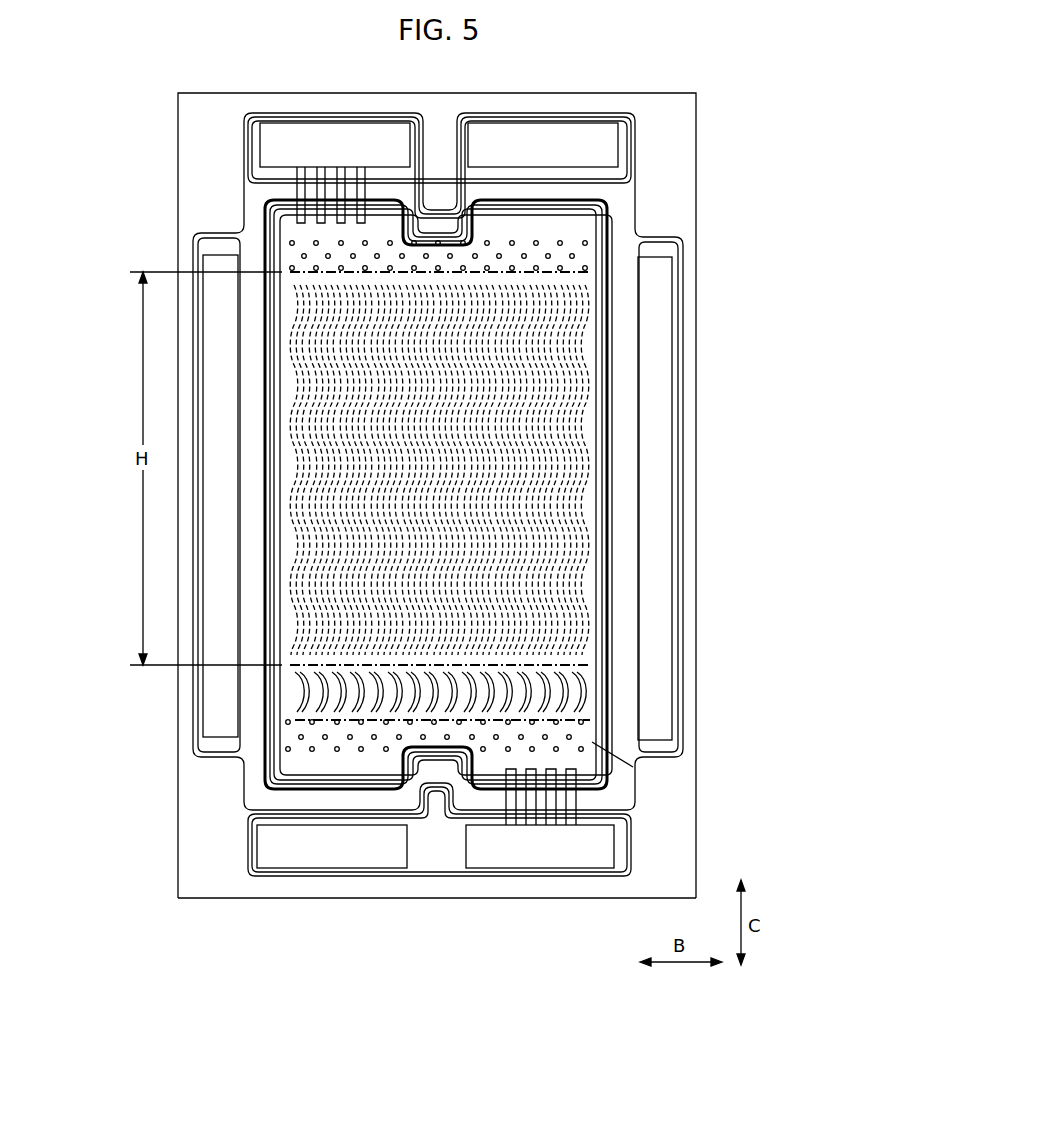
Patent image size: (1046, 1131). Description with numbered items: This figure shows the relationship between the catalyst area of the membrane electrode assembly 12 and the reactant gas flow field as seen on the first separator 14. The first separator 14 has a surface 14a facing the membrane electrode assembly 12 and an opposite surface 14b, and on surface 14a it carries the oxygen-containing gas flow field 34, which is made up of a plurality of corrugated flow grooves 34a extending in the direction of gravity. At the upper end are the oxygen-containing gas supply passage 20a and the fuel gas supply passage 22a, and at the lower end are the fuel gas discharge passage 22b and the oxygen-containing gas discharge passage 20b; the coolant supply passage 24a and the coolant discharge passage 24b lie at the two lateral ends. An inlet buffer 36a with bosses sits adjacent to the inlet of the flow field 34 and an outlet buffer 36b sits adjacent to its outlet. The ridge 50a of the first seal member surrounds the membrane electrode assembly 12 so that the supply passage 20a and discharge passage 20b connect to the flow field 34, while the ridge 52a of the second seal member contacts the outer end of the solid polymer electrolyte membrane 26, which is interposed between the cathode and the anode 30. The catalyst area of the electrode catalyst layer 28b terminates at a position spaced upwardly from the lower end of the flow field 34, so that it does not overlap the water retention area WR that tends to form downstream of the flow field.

The first separator 14 is at (607, 94).
The surface of first separator 14a is at (428, 886).
The surface of first separator 14b is at (343, 886).
The membrane electrode assembly 12 is at (612, 293).
The oxygen-containing gas supply passage 20a is at (335, 173).
The oxygen-containing gas discharge passage 20b is at (540, 818).
The fuel gas supply passage 22a is at (543, 145).
The fuel gas discharge passage 22b is at (332, 846).
The coolant supply passage 24a is at (652, 632).
The coolant discharge passage 24b is at (222, 716).
The solid polymer electrolyte membrane 26 is at (613, 527).
The electrode catalyst layer 28b is at (565, 462).
The anode 30 is at (598, 498).
The oxygen-containing gas flow field 34 is at (592, 666).
The corrugated flow grooves 34a is at (582, 690).
The inlet buffer 36a is at (557, 245).
The outlet buffer 36b is at (312, 751).
The ridge 50a is at (610, 353).
The ridge 52a is at (604, 366).
The water retention area WR is at (633, 767).